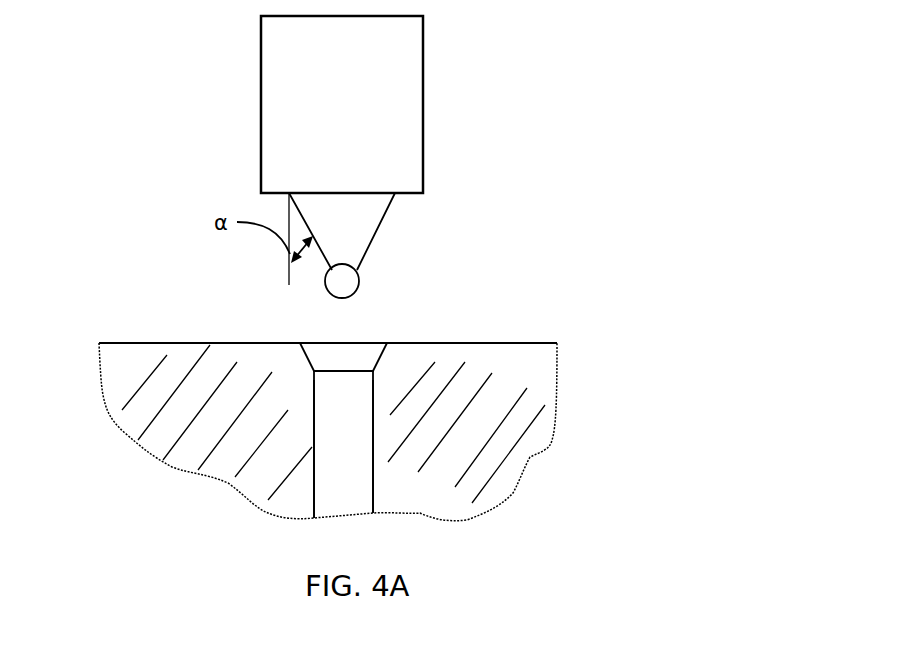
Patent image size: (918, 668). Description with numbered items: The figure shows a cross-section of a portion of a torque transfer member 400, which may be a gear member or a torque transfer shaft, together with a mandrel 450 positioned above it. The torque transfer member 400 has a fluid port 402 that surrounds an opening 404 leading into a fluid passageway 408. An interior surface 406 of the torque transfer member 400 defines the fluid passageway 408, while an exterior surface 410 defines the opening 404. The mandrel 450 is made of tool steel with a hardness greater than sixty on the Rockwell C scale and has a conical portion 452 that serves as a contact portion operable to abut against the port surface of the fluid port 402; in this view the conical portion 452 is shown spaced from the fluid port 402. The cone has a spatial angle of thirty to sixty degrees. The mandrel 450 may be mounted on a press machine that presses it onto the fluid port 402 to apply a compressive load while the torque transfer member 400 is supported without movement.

The torque transfer member 400 is at (517, 373).
The fluid port 402 is at (318, 358).
The opening 404 is at (354, 366).
The interior surface 406 is at (314, 413).
The fluid passageway 408 is at (343, 450).
The exterior surface 410 is at (127, 343).
The mandrel 450 is at (428, 117).
The conical portion 452 is at (376, 248).